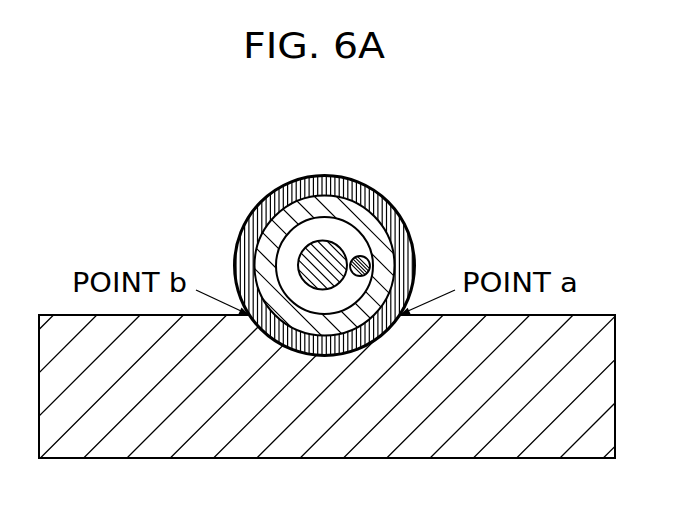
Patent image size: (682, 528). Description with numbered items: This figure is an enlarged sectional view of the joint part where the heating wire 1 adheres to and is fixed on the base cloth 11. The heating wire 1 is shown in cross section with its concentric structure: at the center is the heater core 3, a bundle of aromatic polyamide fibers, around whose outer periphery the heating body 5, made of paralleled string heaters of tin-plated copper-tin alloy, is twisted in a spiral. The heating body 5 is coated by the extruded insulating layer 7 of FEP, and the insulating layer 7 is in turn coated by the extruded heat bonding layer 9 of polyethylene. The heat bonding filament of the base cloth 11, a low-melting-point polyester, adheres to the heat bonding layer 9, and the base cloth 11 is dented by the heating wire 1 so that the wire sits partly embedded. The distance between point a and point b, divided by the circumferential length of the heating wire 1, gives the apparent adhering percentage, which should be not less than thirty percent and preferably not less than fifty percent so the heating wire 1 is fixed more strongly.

The heating wire 1 is at (266, 185).
The heater core 3 is at (345, 222).
The heating body 5 is at (370, 267).
The insulating layer 7 is at (378, 243).
The heat bonding layer 9 is at (333, 243).
The base cloth 11 is at (590, 330).